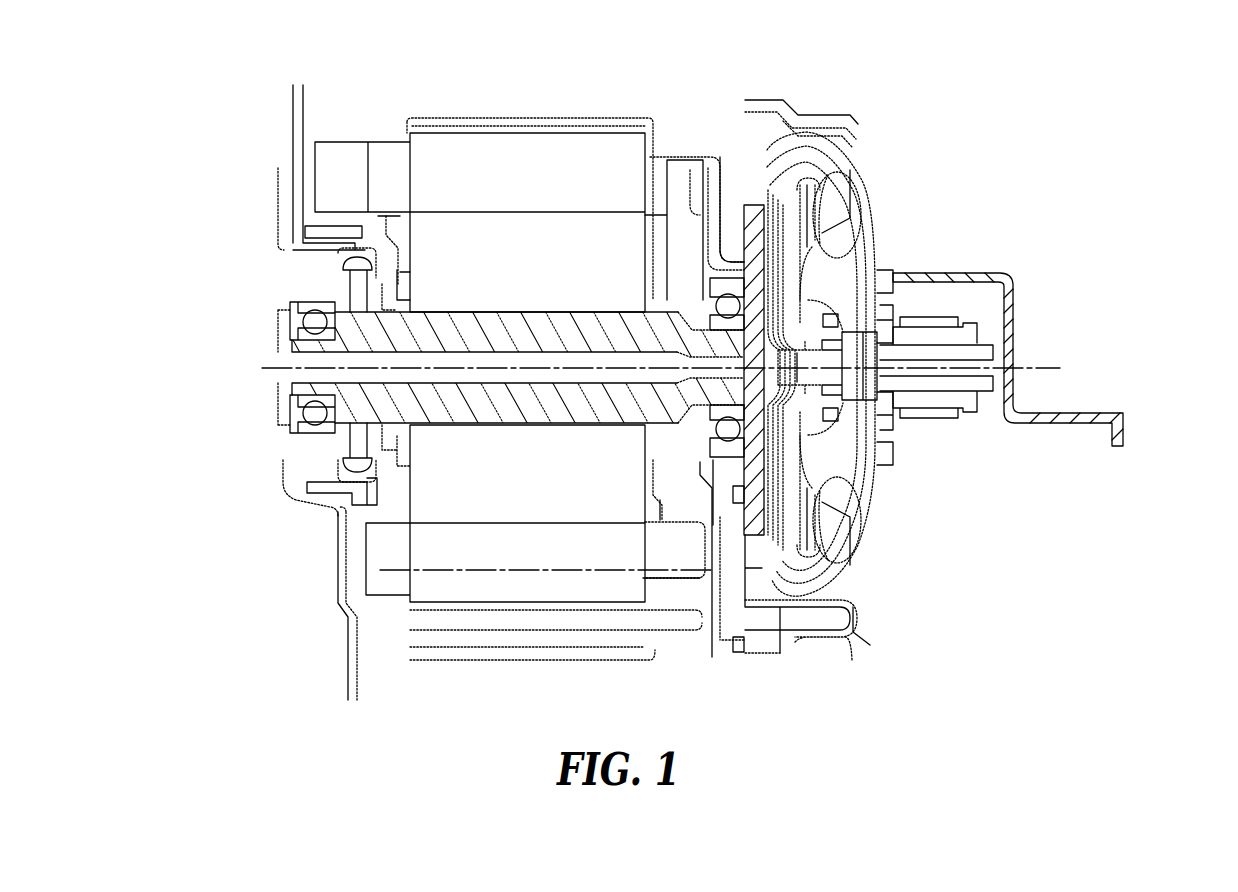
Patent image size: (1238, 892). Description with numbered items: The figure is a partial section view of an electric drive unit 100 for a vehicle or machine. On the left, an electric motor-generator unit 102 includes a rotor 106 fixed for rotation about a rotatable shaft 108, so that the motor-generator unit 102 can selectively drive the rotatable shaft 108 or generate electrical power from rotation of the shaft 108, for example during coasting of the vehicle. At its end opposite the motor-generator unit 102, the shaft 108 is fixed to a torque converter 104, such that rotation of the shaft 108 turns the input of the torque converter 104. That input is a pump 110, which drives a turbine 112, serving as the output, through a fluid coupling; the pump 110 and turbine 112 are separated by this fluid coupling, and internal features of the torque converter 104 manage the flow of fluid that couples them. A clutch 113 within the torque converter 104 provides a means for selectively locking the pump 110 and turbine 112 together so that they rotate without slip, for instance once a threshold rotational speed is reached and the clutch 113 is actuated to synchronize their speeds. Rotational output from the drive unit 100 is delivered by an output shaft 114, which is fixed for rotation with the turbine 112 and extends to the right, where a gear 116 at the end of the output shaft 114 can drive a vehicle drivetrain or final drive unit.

The electric drive unit 100 is at (1089, 169).
The electric motor-generator unit 102 is at (230, 132).
The torque converter 104 is at (872, 160).
The rotor 106 is at (388, 170).
The rotatable shaft 108 is at (487, 403).
The pump 110 is at (860, 202).
The turbine 112 is at (848, 408).
The clutch 113 is at (795, 555).
The output shaft 114 is at (951, 353).
The gear 116 is at (1006, 416).